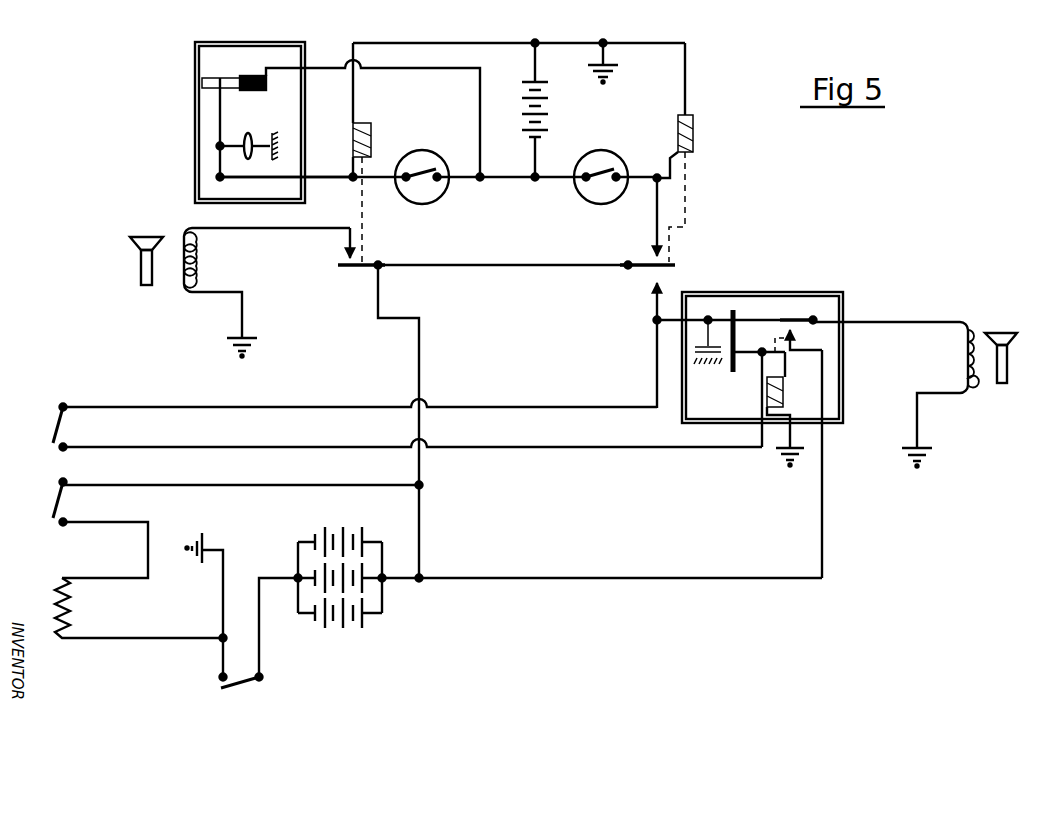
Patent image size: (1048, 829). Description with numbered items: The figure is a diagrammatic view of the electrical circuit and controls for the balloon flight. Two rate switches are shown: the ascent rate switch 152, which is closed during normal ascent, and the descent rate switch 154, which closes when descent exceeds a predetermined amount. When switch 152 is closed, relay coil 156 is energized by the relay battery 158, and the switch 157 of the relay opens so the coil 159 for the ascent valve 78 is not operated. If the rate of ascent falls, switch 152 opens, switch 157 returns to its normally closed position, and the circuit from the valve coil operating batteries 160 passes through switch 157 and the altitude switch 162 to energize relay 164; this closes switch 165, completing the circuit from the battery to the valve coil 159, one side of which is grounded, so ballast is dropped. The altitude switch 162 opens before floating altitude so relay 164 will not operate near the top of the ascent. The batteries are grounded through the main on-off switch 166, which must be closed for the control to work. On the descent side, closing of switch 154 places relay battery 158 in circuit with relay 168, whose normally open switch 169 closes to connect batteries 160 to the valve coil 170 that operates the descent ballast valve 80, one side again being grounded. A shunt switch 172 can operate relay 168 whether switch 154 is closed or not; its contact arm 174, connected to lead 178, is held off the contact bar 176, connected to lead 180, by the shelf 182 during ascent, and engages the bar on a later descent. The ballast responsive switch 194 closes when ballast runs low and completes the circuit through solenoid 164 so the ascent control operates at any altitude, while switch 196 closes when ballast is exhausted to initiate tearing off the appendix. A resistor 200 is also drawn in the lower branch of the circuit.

The ascent valve 78 is at (1000, 333).
The descent ballast valve 80 is at (147, 236).
The ascent rate switch 152 is at (575, 192).
The descent rate switch 154 is at (442, 195).
The relay coil 156 is at (694, 128).
The relay switch 157 is at (674, 266).
The relay battery 158 is at (553, 95).
The valve coil 159 is at (958, 362).
The valve coil operating batteries 160 is at (350, 635).
The altitude switch 162 is at (736, 310).
The relay 164 is at (768, 390).
The relay switch 165 is at (800, 323).
The main on-off switch 166 is at (236, 690).
The relay 168 is at (371, 140).
The relay switch 169 is at (352, 268).
The valve coil 170 is at (200, 266).
The shunt switch 172 is at (216, 118).
The contact arm 174 is at (224, 108).
The contact bar 176 is at (256, 75).
The lead 178 is at (278, 176).
The lead 180 is at (316, 68).
The shelf 182 is at (228, 70).
The ballast responsive switch 194 is at (68, 423).
The switch 196 is at (68, 500).
The resistor 200 is at (60, 642).